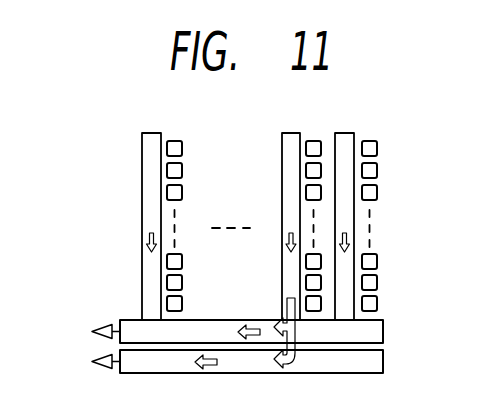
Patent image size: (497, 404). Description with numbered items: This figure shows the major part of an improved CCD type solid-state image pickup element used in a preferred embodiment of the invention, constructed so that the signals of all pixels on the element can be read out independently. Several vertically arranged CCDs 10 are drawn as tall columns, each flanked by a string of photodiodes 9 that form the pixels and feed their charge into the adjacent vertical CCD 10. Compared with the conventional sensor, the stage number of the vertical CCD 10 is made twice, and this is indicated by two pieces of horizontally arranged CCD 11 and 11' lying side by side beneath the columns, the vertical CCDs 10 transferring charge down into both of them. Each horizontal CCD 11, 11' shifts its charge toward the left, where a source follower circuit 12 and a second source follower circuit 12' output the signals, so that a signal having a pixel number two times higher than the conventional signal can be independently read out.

The photodiode 9 is at (377, 307).
The CCD in a vertical direction 10 is at (354, 212).
The CCD in a horizontal direction 11 is at (279, 335).
The second CCD in a horizontal direction 11' is at (276, 339).
The source follower circuit 12 is at (84, 321).
The second source follower circuit 12' is at (81, 361).